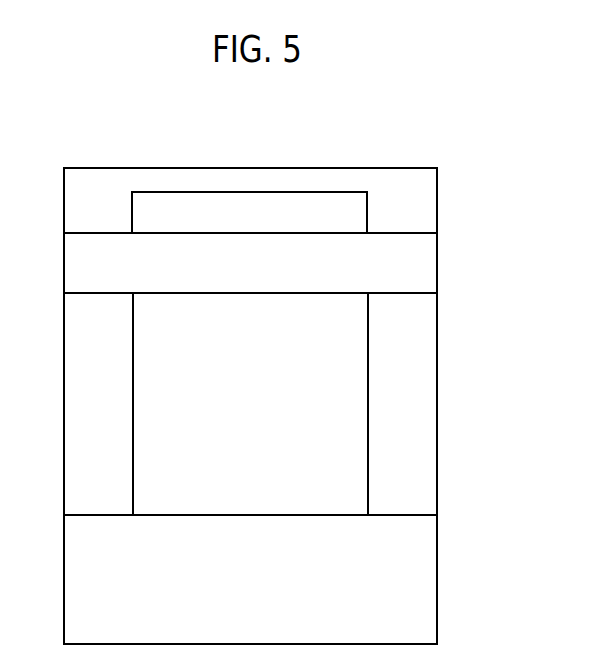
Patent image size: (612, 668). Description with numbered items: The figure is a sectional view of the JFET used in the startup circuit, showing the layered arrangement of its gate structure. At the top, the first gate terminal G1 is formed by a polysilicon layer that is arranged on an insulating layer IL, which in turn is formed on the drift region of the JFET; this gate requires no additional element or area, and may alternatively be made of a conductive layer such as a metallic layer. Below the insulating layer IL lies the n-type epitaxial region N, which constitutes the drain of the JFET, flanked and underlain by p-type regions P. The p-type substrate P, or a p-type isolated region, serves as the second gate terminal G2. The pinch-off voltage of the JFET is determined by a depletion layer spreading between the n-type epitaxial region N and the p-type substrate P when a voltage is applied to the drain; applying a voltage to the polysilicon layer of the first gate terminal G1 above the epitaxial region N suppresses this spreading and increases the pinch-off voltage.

The first gate terminal G1 is at (304, 203).
The second gate terminal G2 is at (428, 565).
The insulating layer IL is at (250, 263).
The n-type epitaxial region N is at (250, 404).
The p-type substrate P is at (250, 404).